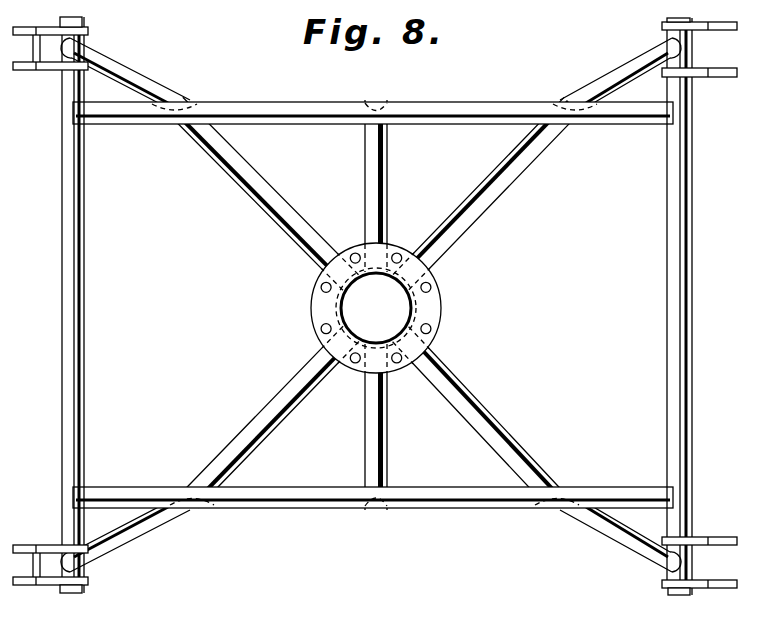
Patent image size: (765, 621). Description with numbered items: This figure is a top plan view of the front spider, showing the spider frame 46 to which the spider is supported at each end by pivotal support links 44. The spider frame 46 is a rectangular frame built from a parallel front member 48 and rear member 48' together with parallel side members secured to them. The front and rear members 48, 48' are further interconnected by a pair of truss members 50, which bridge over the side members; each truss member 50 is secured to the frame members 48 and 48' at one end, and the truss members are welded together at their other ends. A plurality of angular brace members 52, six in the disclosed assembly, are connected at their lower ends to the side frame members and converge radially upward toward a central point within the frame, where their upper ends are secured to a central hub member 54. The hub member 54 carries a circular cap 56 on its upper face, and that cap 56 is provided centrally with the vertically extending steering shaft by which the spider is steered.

The pivotal support links 44 is at (26, 27).
The spider frame 46 is at (380, 311).
The front member 48 is at (703, 306).
The rear member 48' is at (101, 305).
The truss members 50 is at (434, 105).
The angular brace members 52 is at (264, 207).
The central hub member 54 is at (412, 312).
The circular cap 56 is at (313, 310).